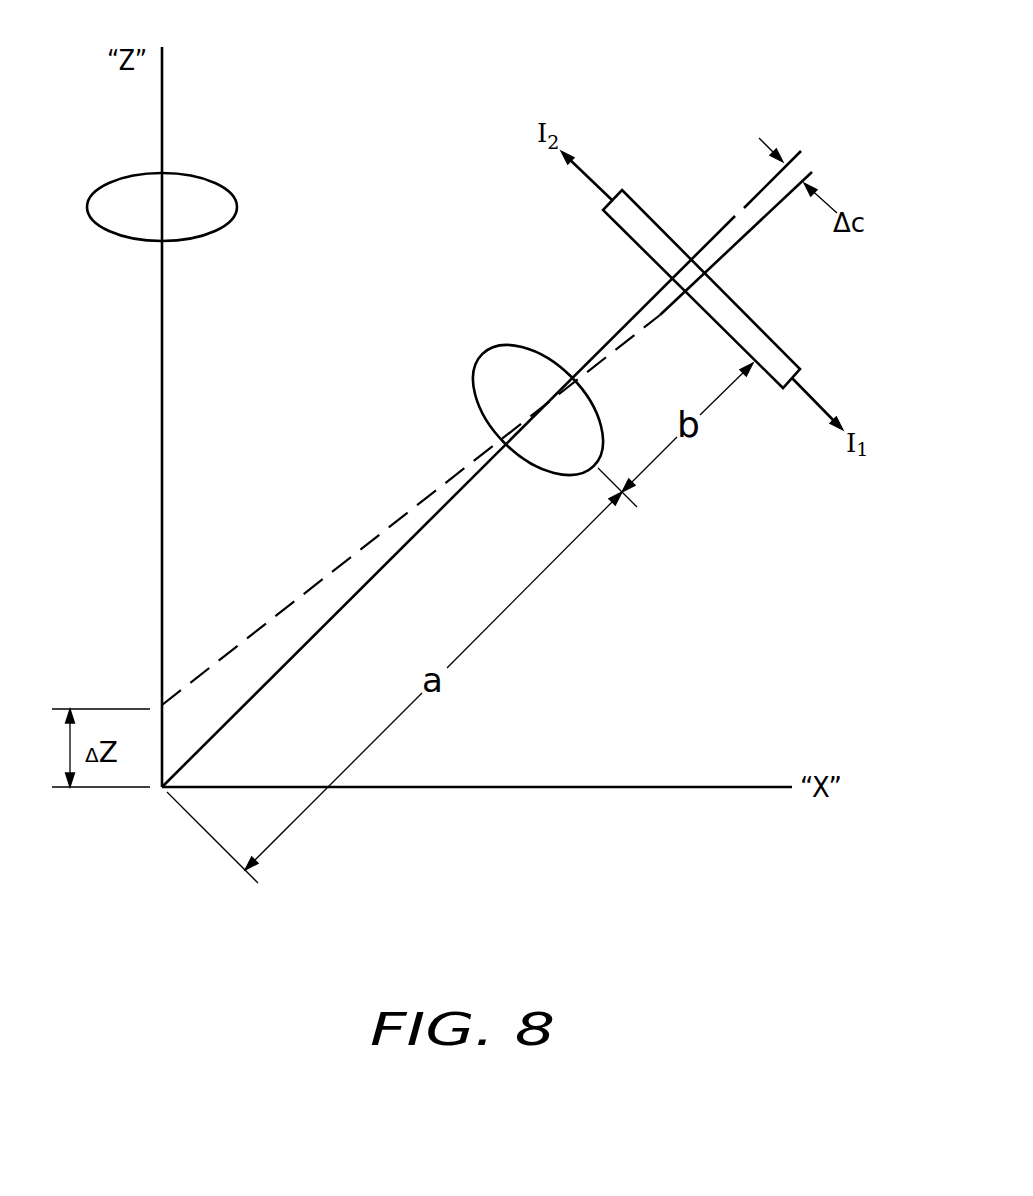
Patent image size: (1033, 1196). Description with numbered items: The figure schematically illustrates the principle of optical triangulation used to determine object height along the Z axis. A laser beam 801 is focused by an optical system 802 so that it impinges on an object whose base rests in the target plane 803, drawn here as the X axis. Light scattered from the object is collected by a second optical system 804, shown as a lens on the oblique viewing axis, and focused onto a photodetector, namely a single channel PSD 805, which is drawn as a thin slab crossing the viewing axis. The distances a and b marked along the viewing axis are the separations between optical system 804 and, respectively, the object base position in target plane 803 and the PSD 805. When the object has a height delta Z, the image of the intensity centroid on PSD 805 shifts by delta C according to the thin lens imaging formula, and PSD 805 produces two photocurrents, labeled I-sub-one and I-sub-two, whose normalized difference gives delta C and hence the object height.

The laser beam 801 is at (161, 399).
The optical system 802 is at (88, 215).
The target plane 803 is at (675, 789).
The optical system 804 is at (500, 345).
The single channel PSD 805 is at (800, 370).